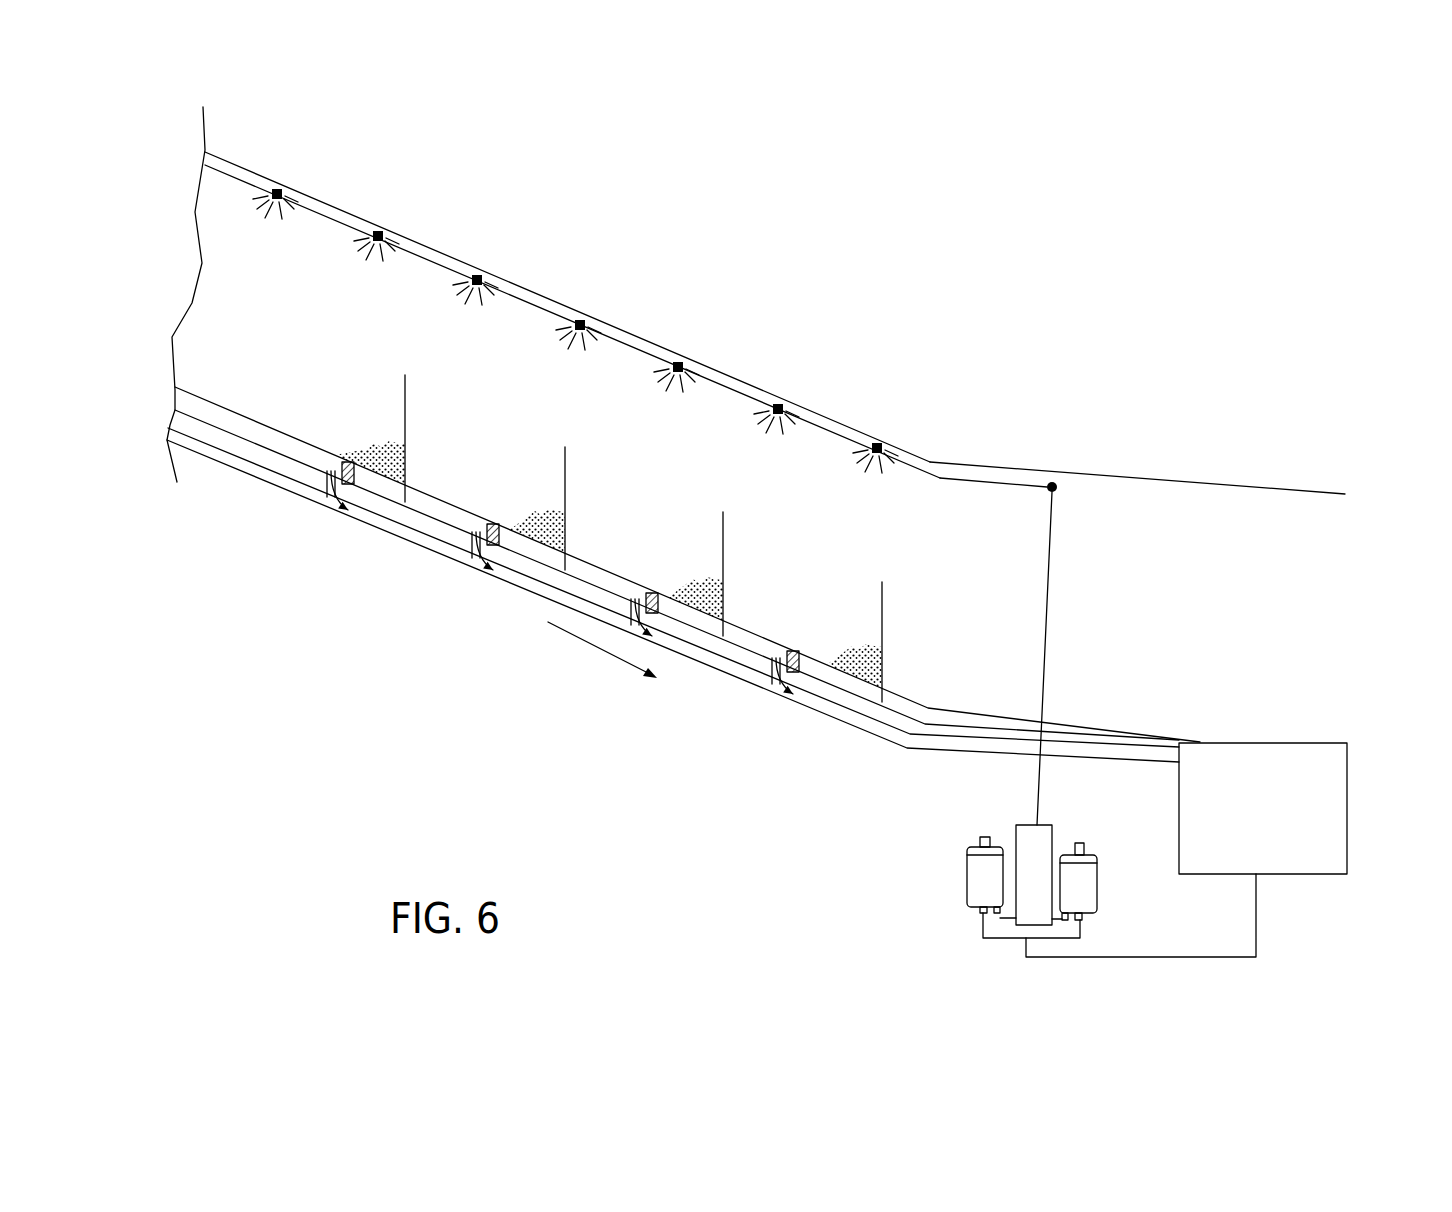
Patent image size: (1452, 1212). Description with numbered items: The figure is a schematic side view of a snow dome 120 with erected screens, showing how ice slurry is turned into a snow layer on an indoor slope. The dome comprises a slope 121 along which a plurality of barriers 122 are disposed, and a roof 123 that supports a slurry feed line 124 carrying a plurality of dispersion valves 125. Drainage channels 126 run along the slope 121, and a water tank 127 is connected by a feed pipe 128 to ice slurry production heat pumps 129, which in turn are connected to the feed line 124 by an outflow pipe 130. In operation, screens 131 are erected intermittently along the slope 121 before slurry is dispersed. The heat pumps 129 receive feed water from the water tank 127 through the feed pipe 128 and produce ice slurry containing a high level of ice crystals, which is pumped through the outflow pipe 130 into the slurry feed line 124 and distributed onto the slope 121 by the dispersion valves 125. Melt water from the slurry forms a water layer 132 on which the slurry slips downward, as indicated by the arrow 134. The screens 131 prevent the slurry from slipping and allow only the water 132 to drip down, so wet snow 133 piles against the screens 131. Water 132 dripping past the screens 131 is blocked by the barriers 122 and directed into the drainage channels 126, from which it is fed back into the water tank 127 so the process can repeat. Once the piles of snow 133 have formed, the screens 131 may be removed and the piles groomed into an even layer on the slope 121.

The snow dome 120 is at (898, 338).
The slope 121 is at (275, 452).
The barriers 122 is at (493, 547).
The roof 123 is at (1025, 462).
The slurry feed line 124 is at (638, 347).
The dispersion valves 125 is at (487, 272).
The drainage channels 126 is at (407, 527).
The water tank 127 is at (1327, 817).
The feed pipe 128 is at (1147, 957).
The ice slurry production heat pumps 129 is at (1070, 897).
The outflow pipe 130 is at (1045, 620).
The screens 131 is at (884, 607).
The water layer 132 is at (747, 640).
The wet snow 133 is at (866, 664).
The arrow 134 is at (600, 652).